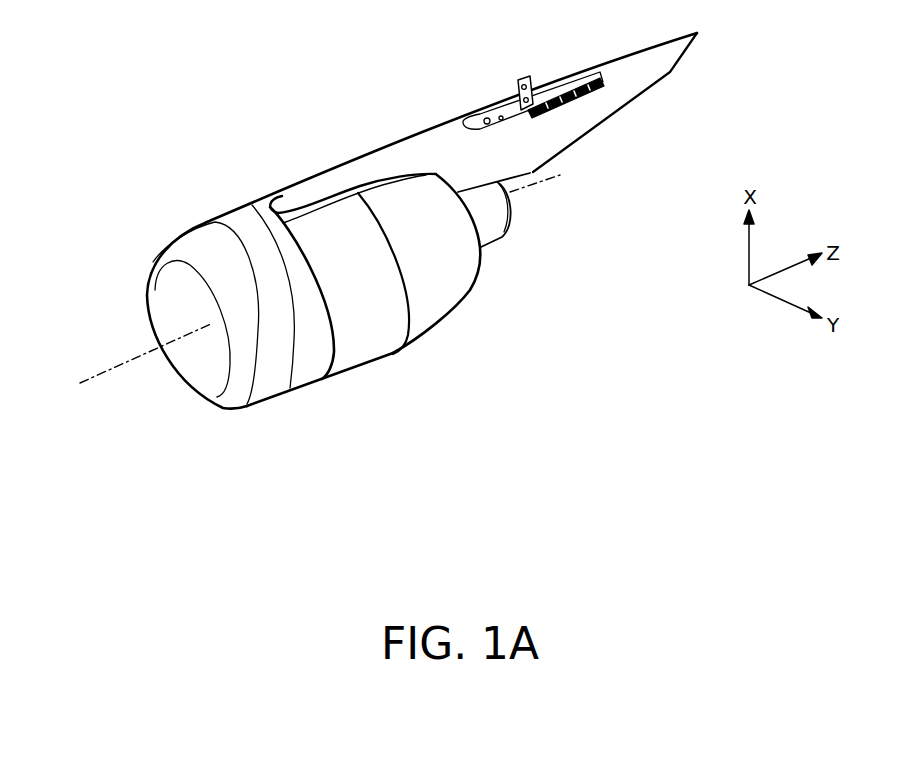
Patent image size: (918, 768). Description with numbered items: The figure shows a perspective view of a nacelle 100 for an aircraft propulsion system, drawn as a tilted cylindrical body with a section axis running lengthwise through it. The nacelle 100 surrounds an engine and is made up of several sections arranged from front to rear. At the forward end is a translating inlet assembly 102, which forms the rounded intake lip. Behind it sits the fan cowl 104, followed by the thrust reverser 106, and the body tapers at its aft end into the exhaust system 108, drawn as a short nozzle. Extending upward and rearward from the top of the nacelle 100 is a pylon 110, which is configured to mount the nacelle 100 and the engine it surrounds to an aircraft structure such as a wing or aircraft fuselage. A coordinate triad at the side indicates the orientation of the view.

The nacelle 100 is at (377, 247).
The translating inlet assembly 102 is at (287, 378).
The fan cowl 104 is at (373, 330).
The thrust reverser 106 is at (442, 293).
The exhaust system 108 is at (493, 228).
The pylon 110 is at (573, 118).